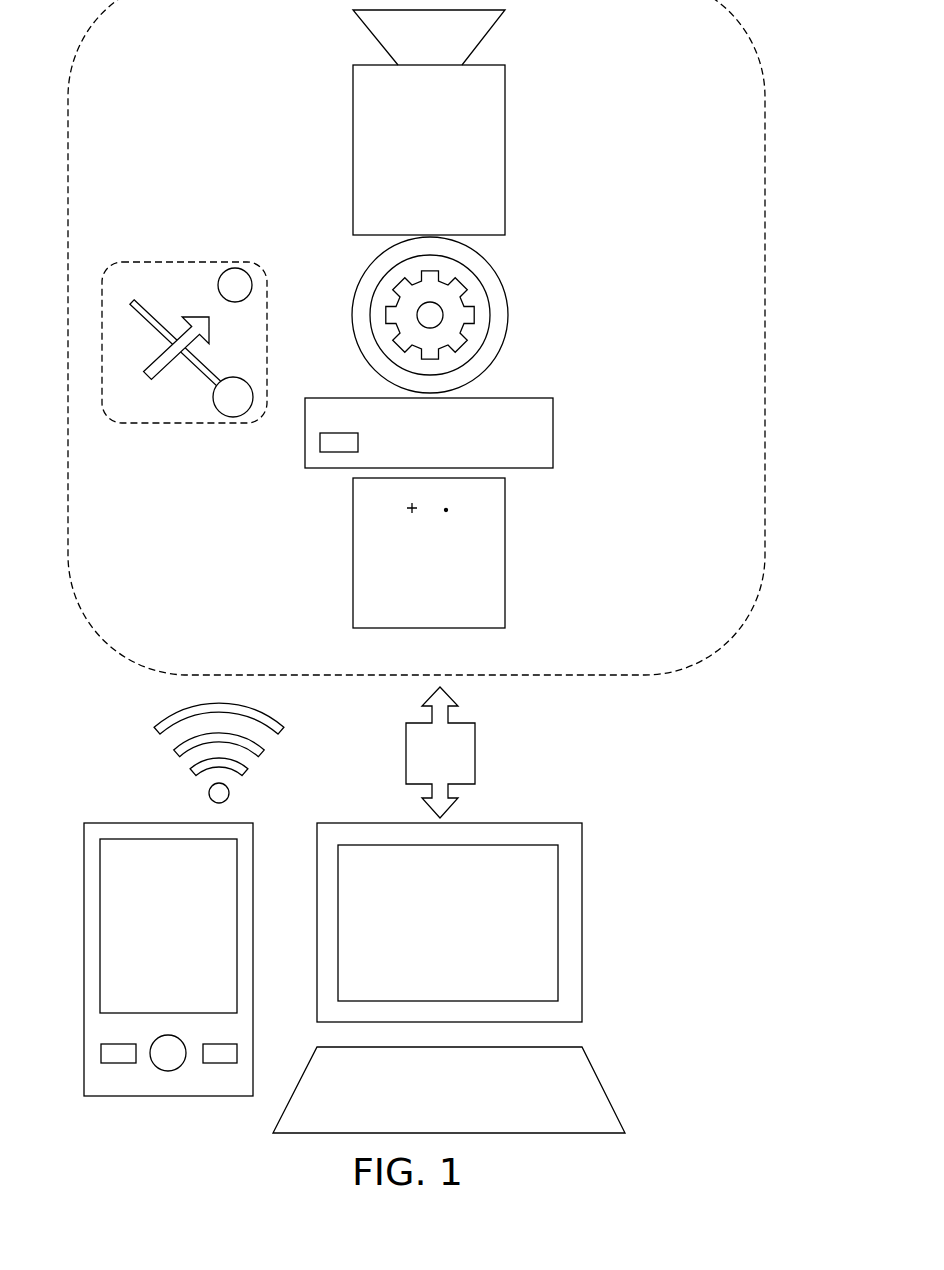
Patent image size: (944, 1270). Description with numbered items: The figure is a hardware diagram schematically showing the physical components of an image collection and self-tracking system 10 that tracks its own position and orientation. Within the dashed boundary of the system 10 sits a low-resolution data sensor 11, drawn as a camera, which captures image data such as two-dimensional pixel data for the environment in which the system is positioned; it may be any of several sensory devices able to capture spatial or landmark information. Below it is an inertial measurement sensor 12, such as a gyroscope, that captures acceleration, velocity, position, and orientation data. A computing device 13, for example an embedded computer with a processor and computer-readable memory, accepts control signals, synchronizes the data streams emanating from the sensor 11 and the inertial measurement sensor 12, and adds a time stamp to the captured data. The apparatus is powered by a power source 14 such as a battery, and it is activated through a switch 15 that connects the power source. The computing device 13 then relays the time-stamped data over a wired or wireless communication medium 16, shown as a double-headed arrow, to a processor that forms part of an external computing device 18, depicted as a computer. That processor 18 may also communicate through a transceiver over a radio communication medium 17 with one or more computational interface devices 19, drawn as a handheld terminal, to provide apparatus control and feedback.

The system 10 is at (710, 656).
The low-resolution data sensor 11 is at (505, 133).
The inertial measurement sensor 12 is at (508, 312).
The computing device 13 is at (553, 440).
The power source 14 is at (505, 557).
The switch 15 is at (190, 424).
The communication medium 16 is at (475, 745).
The radio communication medium 17 is at (178, 714).
The computing device 18 is at (582, 920).
The computational interface device 19 is at (84, 948).